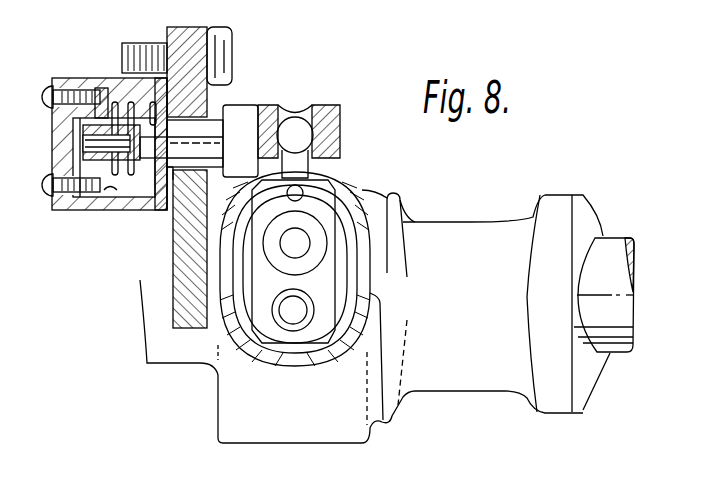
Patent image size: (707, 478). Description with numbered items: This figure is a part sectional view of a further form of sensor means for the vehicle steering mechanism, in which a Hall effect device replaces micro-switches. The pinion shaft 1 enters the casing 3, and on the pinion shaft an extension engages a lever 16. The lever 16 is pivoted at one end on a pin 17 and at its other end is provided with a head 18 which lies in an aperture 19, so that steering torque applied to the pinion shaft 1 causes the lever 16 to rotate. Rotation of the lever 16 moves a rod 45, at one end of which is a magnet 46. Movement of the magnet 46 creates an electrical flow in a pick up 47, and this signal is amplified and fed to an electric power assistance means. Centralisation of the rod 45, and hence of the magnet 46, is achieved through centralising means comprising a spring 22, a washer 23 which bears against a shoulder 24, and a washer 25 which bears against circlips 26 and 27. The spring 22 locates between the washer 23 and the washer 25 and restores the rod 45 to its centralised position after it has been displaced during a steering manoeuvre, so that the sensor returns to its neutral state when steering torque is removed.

The pinion shaft 1 is at (312, 230).
The casing 3 is at (238, 404).
The lever 16 is at (258, 262).
The pin 17 is at (287, 312).
The head 18 is at (300, 128).
The aperture 19 is at (281, 116).
The spring 22 is at (116, 200).
The washer 23 is at (133, 200).
The shoulder 24 is at (127, 66).
The washer 25 is at (110, 210).
The circlip 26 is at (100, 82).
The circlip 27 is at (95, 113).
The rod 45 is at (214, 132).
The magnet 46 is at (90, 150).
The pick up 47 is at (83, 143).